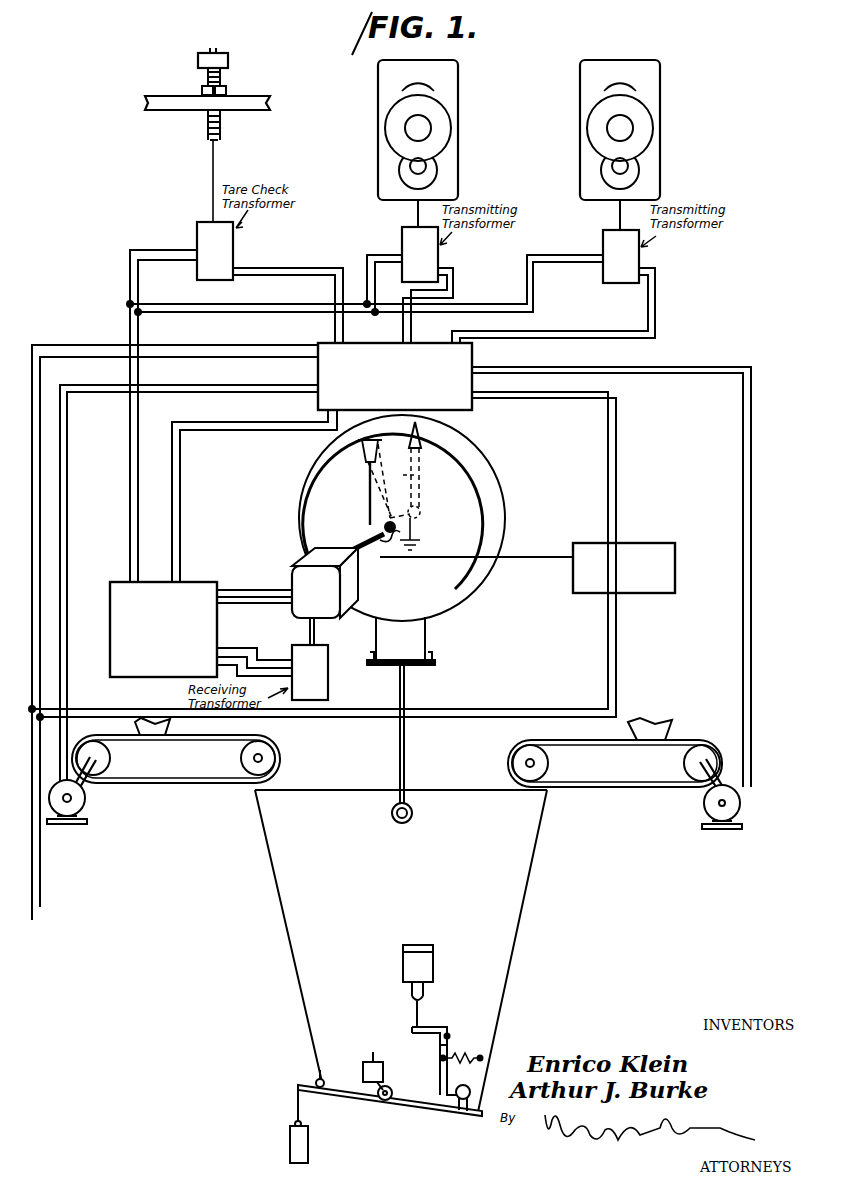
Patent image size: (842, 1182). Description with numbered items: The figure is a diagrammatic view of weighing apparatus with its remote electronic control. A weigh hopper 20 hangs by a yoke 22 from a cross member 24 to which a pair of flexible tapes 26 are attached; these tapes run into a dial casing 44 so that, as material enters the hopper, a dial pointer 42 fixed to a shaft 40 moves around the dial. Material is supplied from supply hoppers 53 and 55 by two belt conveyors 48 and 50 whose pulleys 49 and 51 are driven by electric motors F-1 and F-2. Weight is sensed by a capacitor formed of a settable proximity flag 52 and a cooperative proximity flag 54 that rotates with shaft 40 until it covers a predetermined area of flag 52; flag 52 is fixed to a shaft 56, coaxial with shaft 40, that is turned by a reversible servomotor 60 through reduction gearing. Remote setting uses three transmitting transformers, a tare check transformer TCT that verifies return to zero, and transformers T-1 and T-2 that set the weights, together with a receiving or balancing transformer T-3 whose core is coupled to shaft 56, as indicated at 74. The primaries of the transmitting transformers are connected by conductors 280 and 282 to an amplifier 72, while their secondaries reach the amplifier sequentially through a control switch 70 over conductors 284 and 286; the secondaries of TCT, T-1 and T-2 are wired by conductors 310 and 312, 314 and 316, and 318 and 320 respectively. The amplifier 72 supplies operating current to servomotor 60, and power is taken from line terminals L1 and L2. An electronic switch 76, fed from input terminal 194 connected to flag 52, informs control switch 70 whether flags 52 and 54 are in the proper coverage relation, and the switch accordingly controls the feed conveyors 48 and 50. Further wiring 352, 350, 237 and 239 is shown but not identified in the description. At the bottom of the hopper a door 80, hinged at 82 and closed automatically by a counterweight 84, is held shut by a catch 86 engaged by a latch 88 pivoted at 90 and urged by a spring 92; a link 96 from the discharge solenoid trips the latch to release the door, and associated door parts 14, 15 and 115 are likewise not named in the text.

The tare check transformer TCT is at (206, 228).
The transmitting transformer T-1 is at (403, 238).
The transmitting transformer T-2 is at (614, 237).
The receiving or balancing transformer T-3 is at (336, 680).
The conductor 280 is at (128, 265).
The conductor 282 is at (138, 302).
The conductor 310 is at (282, 258).
The conductor 312 is at (308, 278).
The conductor 314 is at (455, 283).
The conductor 316 is at (403, 327).
The conductor 318 is at (655, 299).
The conductor 320 is at (626, 331).
The line conductor 352 is at (193, 340).
The line conductor 350 is at (206, 360).
The line terminal L1 is at (33, 913).
The line terminal L2 is at (42, 890).
The conductor 237 is at (606, 477).
The conductor 239 is at (620, 455).
The conductor 286 is at (182, 464).
The conductor 284 is at (163, 505).
The input terminal 194 is at (552, 557).
The control switch 70 is at (472, 402).
The amplifier 72 is at (110, 618).
The electronic switch 76 is at (675, 551).
The dial casing 44 is at (447, 589).
The shaft 40 is at (422, 518).
The dial pointer 42 is at (419, 475).
The cooperative proximity flag 54 is at (380, 478).
The proximity flag 52 is at (365, 485).
The shaft 56 is at (347, 541).
The reversible electric servomotor 60 is at (291, 579).
The operative connection 74 is at (307, 629).
The flexible tapes 26 is at (424, 635).
The cross member 24 is at (430, 664).
The yoke 22 is at (415, 745).
The weigh hopper 20 is at (280, 862).
The feed conveyor 48 is at (191, 785).
The pulley 49 is at (110, 755).
The supply hopper 53 is at (147, 730).
The feeder motor F-1 is at (80, 804).
The feed conveyor 50 is at (593, 788).
The pulley 51 is at (690, 763).
The supply hopper 55 is at (660, 721).
The feeder motor F-2 is at (741, 804).
The hopper door 80 is at (368, 1100).
The hinge 82 is at (315, 1080).
The counterweight 84 is at (288, 1140).
The fulcrum 14 is at (392, 1093).
The switch 15 is at (371, 1063).
The dashpot 115 is at (403, 962).
The link 96 is at (422, 1010).
The pivot 90 is at (445, 1030).
The latch 88 is at (438, 1046).
The spring 92 is at (452, 1052).
The catch 86 is at (445, 1088).